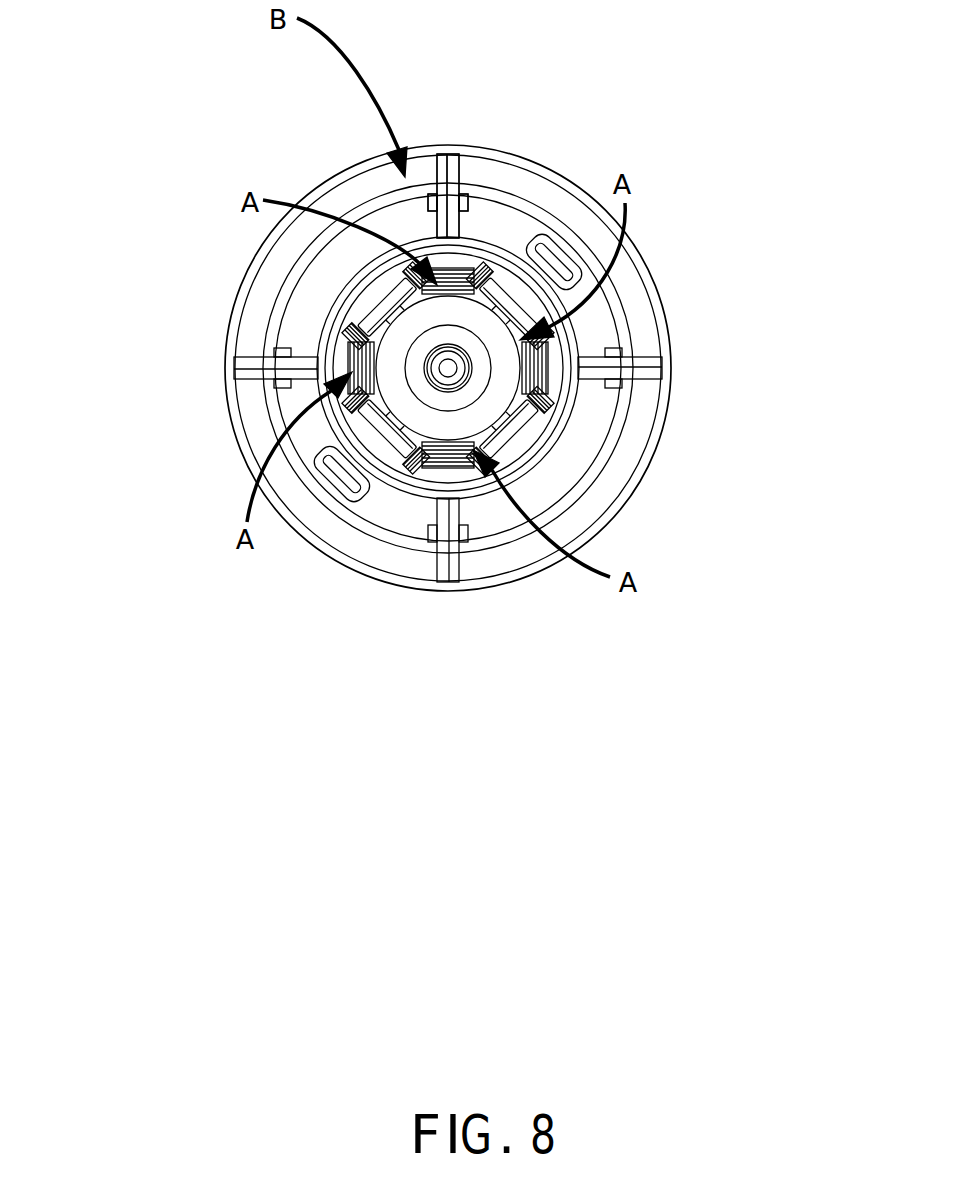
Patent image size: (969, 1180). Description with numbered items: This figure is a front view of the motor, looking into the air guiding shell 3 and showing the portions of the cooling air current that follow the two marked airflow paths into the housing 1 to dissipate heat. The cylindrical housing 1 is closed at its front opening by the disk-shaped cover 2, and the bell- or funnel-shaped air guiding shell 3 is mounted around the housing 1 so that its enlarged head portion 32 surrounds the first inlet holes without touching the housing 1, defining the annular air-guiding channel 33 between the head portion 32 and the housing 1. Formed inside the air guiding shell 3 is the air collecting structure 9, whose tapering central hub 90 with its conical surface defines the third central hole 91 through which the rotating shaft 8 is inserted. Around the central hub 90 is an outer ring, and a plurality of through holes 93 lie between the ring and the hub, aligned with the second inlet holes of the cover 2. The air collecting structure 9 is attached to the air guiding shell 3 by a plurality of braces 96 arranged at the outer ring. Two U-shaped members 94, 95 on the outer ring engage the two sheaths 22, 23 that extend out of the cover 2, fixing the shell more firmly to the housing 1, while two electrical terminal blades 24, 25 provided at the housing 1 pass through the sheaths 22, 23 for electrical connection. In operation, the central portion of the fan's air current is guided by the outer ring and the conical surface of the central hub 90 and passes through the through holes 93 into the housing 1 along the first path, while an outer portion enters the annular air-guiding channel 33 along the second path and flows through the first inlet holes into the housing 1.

The housing 1 is at (617, 413).
The cover 2 is at (322, 303).
The air guiding shell 3 is at (445, 141).
The rotating shaft 8 is at (520, 375).
The air collecting structure 9 is at (467, 488).
The sheath 22 is at (332, 470).
The sheath 23 is at (560, 240).
The electrical terminal blade 24 is at (345, 485).
The electrical terminal blade 25 is at (555, 235).
The head portion 32 is at (648, 277).
The annular air-guiding channel 33 is at (547, 232).
The central hub 90 is at (365, 348).
The third central hole 91 is at (460, 390).
The through holes 93 is at (362, 238).
The U-shaped member 94 is at (380, 500).
The U-shaped member 95 is at (532, 181).
The braces 96 is at (460, 168).